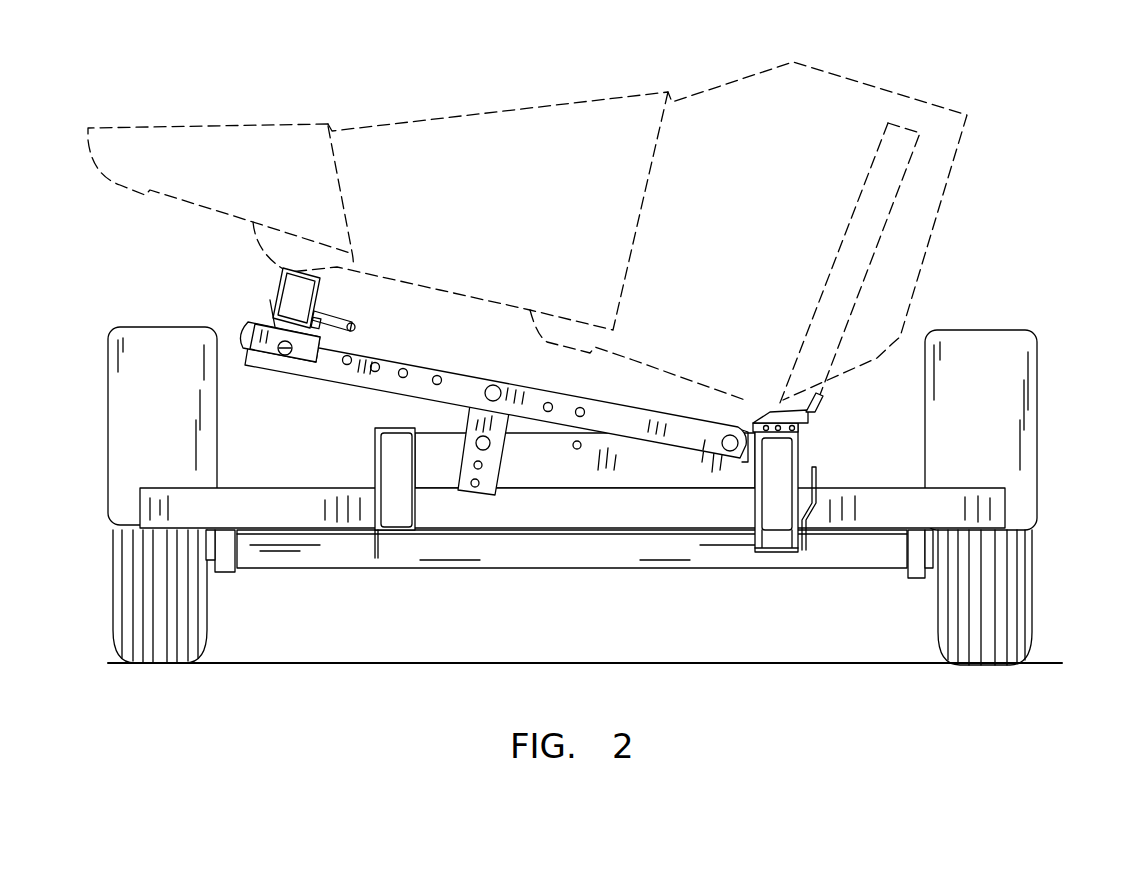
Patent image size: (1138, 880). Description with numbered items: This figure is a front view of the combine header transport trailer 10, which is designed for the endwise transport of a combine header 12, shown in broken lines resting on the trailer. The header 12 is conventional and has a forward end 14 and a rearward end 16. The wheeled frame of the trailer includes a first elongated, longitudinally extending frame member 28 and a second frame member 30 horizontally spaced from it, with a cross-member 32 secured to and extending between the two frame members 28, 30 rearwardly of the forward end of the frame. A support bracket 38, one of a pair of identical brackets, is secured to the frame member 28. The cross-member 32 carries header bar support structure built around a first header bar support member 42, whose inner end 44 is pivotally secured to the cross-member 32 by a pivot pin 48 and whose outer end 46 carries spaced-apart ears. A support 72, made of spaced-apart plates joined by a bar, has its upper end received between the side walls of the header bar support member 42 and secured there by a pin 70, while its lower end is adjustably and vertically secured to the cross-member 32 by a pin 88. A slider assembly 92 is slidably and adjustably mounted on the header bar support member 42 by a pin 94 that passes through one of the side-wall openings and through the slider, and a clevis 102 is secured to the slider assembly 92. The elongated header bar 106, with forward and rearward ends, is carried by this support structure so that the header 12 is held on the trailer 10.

The trailer 10 is at (1060, 287).
The combine header 12 is at (810, 140).
The forward end 14 is at (70, 128).
The rearward end 16 is at (925, 303).
The first frame member 28 is at (783, 472).
The second frame member 30 is at (395, 477).
The cross-member 32 is at (638, 468).
The support bracket 38 is at (807, 418).
The first header bar support member 42 is at (495, 382).
The inner end 44 is at (747, 453).
The outer end 46 is at (240, 337).
The pivot pin 48 is at (727, 435).
The pin 70 is at (505, 391).
The support 72 is at (445, 461).
The pin 88 is at (484, 441).
The slider assembly 92 is at (352, 375).
The pin 94 is at (288, 357).
The clevis 102 is at (343, 320).
The header bar 106 is at (288, 292).